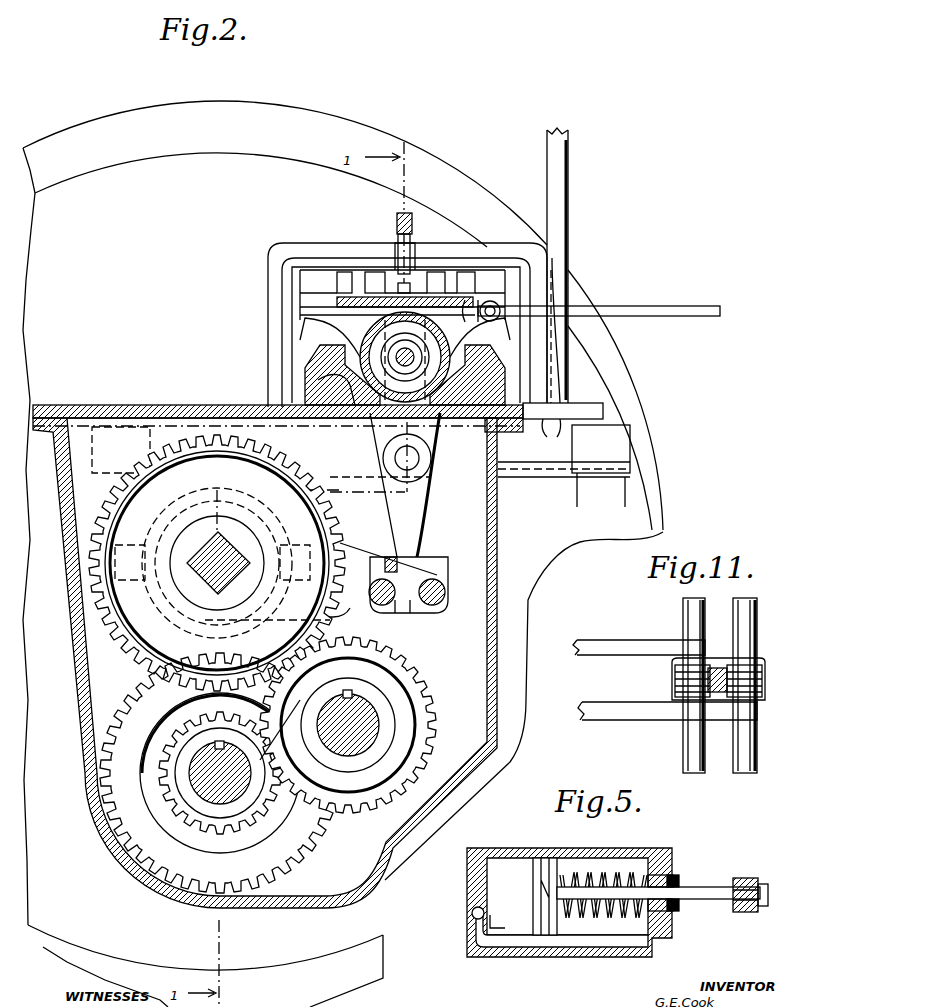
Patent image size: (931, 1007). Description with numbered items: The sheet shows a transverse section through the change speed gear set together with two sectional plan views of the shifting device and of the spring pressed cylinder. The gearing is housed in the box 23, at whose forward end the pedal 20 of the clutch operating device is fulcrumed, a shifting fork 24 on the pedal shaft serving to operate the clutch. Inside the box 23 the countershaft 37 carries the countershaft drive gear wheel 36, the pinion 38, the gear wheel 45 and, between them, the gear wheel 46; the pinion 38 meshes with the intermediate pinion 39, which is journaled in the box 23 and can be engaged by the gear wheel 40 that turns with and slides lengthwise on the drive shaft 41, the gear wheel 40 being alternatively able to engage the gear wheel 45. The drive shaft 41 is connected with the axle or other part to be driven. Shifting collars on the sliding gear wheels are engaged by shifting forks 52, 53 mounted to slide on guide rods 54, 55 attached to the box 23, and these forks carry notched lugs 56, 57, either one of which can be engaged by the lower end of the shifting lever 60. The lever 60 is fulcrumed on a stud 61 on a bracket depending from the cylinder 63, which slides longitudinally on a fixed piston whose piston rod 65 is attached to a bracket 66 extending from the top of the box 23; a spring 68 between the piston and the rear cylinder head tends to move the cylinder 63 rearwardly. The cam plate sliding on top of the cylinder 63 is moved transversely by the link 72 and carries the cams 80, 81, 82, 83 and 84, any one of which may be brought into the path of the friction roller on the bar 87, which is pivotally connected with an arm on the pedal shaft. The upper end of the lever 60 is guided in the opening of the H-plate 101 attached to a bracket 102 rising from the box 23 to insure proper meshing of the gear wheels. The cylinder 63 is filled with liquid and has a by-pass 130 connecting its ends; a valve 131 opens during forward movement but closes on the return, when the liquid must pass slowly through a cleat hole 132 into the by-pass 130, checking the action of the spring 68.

In FIG. 2, the pedal 20 is at (560, 204).
In FIG. 2, the box 23 is at (88, 678).
In FIG. 2, the shifting fork 24 is at (145, 575).
In FIG. 2, the countershaft drive gear wheel 36 is at (335, 827).
In FIG. 2, the countershaft 37 is at (196, 780).
In FIG. 2, the pinion 38 is at (232, 815).
In FIG. 2, the intermediate pinion 39 is at (420, 695).
In FIG. 2, the gear wheel 40 is at (292, 458).
In FIG. 2, the drive shaft 41 is at (208, 576).
In FIG. 2, the gear wheel 45 is at (245, 862).
In FIG. 2, the gear wheel 46 is at (288, 862).
In FIG. 2, the shifting fork 52 is at (350, 608).
In FIG. 11, the shifting fork 52 is at (643, 713).
In FIG. 11, the shifting fork 53 is at (638, 640).
In FIG. 2, the guide rod 54 is at (382, 605).
In FIG. 11, the guide rod 54 is at (683, 745).
In FIG. 2, the guide rod 55 is at (432, 605).
In FIG. 11, the guide rod 55 is at (757, 745).
In FIG. 2, the notched lug 56 is at (393, 557).
In FIG. 11, the notched lug 56 is at (675, 679).
In FIG. 2, the notched lug 57 is at (448, 562).
In FIG. 11, the notched lug 57 is at (765, 679).
In FIG. 2, the shifting lever 60 is at (416, 492).
In FIG. 11, the shifting lever 60 is at (719, 665).
In FIG. 2, the stud 61 is at (419, 460).
In FIG. 5, the cylinder 63 is at (555, 858).
In FIG. 2, the piston rod 65 is at (405, 366).
In FIG. 5, the piston rod 65 is at (695, 899).
In FIG. 5, the bracket 66 is at (745, 878).
In FIG. 2, the spring 68 is at (437, 375).
In FIG. 5, the spring 68 is at (615, 872).
In FIG. 2, the link 72 is at (650, 318).
In FIG. 2, the cam 80 is at (343, 272).
In FIG. 2, the cam 81 is at (370, 272).
In FIG. 2, the cam 82 is at (399, 283).
In FIG. 2, the cam 83 is at (432, 272).
In FIG. 2, the cam 84 is at (464, 272).
In FIG. 2, the bar 87 is at (412, 221).
In FIG. 2, the H-plate 101 is at (368, 268).
In FIG. 2, the bracket 102 is at (268, 314).
In FIG. 2, the by-pass 130 is at (352, 383).
In FIG. 5, the by-pass 130 is at (572, 947).
In FIG. 5, the valve 131 is at (472, 912).
In FIG. 5, the cleat hole 132 is at (497, 928).